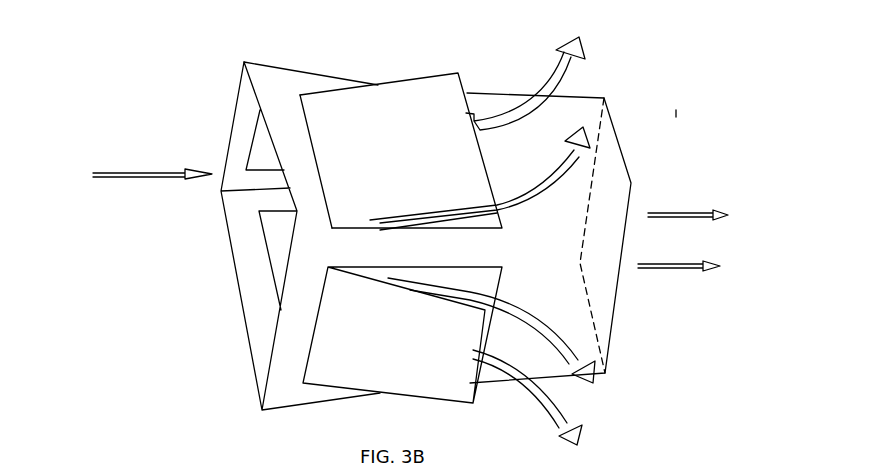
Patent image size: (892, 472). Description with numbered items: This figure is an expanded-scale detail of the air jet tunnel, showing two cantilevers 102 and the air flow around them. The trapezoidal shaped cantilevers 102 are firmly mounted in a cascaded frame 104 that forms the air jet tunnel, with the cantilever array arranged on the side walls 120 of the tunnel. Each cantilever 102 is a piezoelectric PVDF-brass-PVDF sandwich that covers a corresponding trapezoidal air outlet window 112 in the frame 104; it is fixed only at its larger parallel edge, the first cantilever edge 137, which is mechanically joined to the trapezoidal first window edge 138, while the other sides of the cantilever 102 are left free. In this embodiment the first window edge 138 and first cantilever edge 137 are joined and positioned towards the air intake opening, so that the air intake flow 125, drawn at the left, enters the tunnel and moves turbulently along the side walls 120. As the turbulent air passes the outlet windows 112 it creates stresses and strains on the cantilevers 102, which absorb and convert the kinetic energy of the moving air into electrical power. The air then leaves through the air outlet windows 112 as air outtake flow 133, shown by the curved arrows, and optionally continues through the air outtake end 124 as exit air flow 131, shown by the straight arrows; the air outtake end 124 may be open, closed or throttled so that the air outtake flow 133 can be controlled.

The cantilever 102 is at (427, 77).
The cascaded frame 104 is at (590, 98).
The air outlet window 112 is at (480, 275).
The side wall 120 is at (248, 280).
The air outtake end 124 is at (608, 157).
The air intake flow 125 is at (137, 176).
The exit air flow 131 is at (658, 215).
The air outtake flow 133 is at (560, 323).
The first cantilever edge 137 is at (313, 133).
The first window edge 138 is at (315, 135).